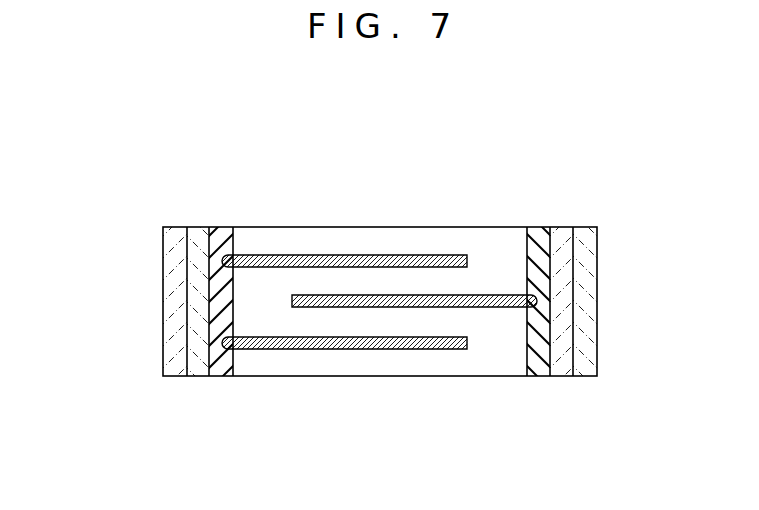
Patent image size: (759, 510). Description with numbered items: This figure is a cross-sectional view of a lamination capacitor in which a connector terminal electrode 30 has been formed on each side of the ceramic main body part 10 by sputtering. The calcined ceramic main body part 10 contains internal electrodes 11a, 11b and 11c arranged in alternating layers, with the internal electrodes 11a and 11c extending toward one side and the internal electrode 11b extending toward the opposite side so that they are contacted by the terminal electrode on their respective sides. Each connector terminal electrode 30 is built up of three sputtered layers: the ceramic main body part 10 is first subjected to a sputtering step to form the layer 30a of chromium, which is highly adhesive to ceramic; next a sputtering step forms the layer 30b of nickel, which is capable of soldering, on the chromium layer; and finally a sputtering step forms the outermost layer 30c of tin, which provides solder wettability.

The ceramic main body part 10 is at (465, 362).
The internal electrode 11a is at (347, 255).
The internal electrode 11b is at (472, 295).
The internal electrode 11c is at (355, 349).
The connector terminal electrode 30 is at (391, 328).
The layer of chromium 30a is at (223, 373).
The layer of nickel 30b is at (195, 373).
The layer of tin 30c is at (172, 373).